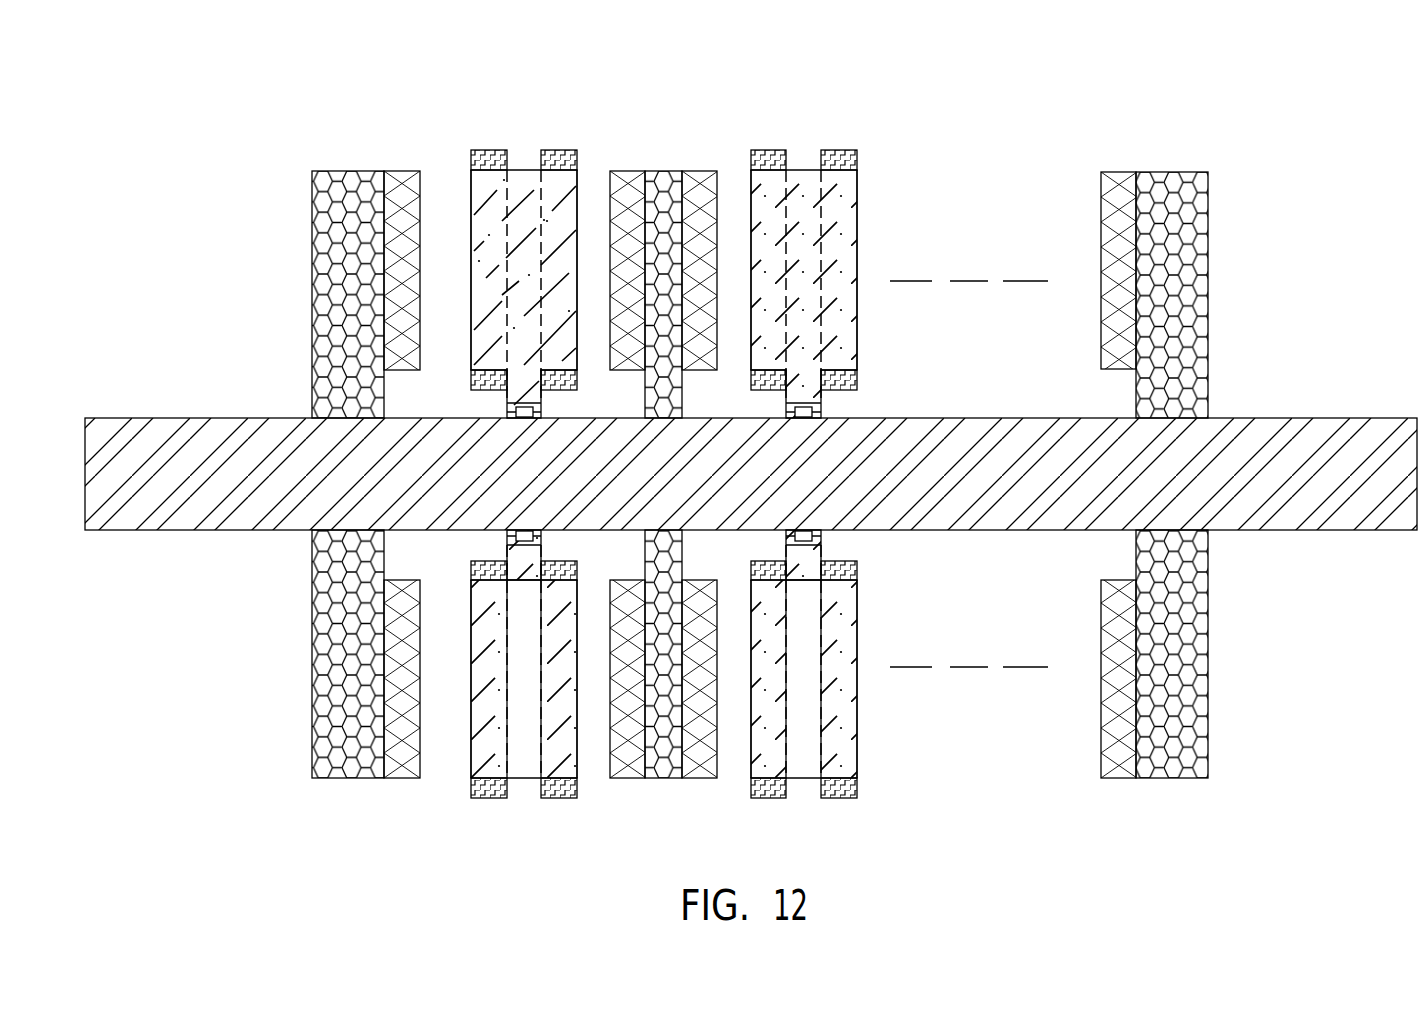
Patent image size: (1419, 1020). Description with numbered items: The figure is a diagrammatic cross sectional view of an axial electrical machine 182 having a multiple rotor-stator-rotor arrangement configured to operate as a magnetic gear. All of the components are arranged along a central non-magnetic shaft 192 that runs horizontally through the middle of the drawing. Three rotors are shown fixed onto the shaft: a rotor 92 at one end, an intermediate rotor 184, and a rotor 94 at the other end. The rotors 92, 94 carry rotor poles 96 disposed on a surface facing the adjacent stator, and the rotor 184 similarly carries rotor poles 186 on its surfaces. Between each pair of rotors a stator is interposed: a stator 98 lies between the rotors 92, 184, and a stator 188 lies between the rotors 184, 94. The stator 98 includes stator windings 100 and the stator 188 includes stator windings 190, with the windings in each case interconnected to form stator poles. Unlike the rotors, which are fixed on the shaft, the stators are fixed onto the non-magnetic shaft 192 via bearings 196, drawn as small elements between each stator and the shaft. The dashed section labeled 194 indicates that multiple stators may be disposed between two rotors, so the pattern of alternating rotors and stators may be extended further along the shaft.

The axial electrical machine 182 is at (1284, 95).
The non-magnetic shaft 192 is at (140, 418).
The rotor 92 is at (350, 171).
The rotor 94 is at (1172, 172).
The rotor poles 96 is at (404, 171).
The stator 98 is at (523, 424).
The stator windings 100 is at (483, 160).
The rotor 184 is at (663, 166).
The rotor poles 186 is at (630, 172).
The stator 188 is at (813, 443).
The stator windings 190 is at (772, 150).
The multiple stators 194 is at (968, 281).
The bearings 196 is at (507, 410).